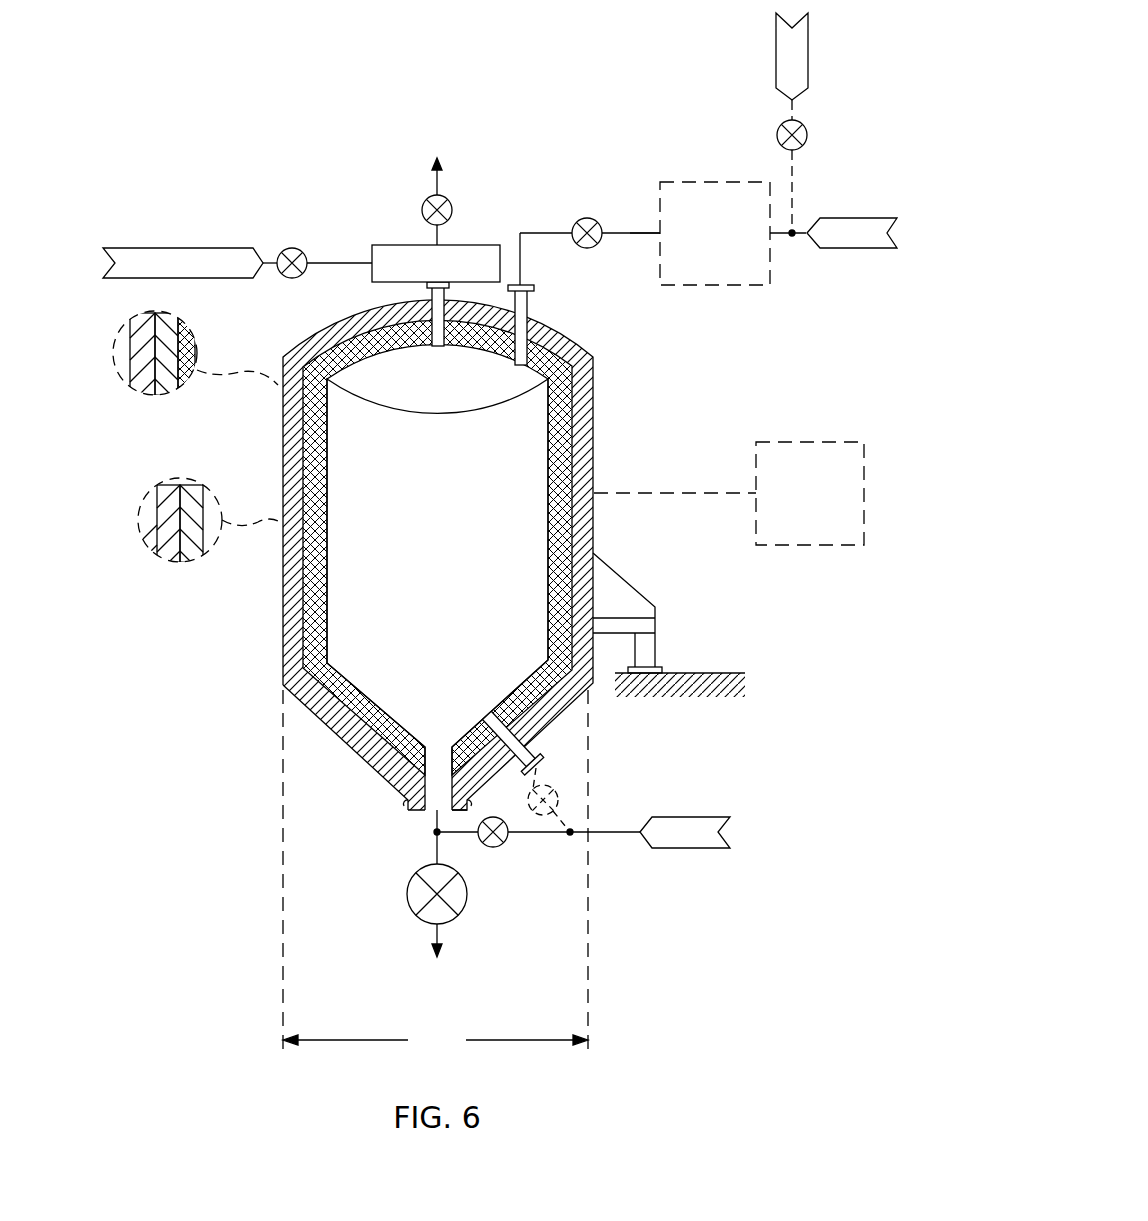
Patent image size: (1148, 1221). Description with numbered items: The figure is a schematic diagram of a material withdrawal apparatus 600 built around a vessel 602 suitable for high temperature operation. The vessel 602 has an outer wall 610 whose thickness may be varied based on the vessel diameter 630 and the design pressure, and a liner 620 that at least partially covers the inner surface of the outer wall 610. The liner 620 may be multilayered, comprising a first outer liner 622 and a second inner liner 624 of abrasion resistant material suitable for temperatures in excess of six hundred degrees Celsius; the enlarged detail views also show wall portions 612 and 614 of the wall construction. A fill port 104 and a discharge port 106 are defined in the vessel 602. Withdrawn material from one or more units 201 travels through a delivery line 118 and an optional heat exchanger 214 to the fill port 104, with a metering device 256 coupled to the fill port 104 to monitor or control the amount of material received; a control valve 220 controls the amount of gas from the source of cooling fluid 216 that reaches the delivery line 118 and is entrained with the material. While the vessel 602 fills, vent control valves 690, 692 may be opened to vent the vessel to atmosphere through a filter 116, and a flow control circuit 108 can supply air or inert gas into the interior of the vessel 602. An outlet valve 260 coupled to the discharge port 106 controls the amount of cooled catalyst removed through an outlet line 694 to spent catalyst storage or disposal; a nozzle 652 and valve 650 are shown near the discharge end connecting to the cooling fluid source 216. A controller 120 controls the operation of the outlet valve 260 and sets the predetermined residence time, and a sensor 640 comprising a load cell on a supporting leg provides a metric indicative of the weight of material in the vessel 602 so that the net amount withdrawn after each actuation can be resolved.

The material withdrawal apparatus 600 is at (220, 125).
The vessel 602 is at (350, 555).
The outer wall 610 is at (178, 398).
The wall layer 612 is at (166, 324).
The wall layer 614 is at (188, 345).
The liner 620 is at (202, 343).
The first outer liner 622 is at (190, 541).
The second inner liner 624 is at (200, 550).
The vessel diameter 630 is at (435, 873).
The sensor 640 is at (656, 664).
The valve 650 is at (562, 802).
The nozzle 652 is at (530, 752).
The vent control valve 690 is at (447, 200).
The vent control valve 692 is at (296, 278).
The outlet line 694 is at (440, 927).
The fill port 104 is at (534, 290).
The discharge port 106 is at (408, 802).
The flow control circuit 108 is at (338, 256).
The filter 116 is at (436, 263).
The delivery line 118 is at (645, 235).
The controller 120 is at (729, 493).
The unit 201 is at (843, 233).
The heat exchanger 214 is at (733, 233).
The source of cooling fluid 216 is at (812, 46).
The control valve 220 is at (812, 132).
The metering device 256 is at (582, 218).
The outlet valve 260 is at (408, 893).